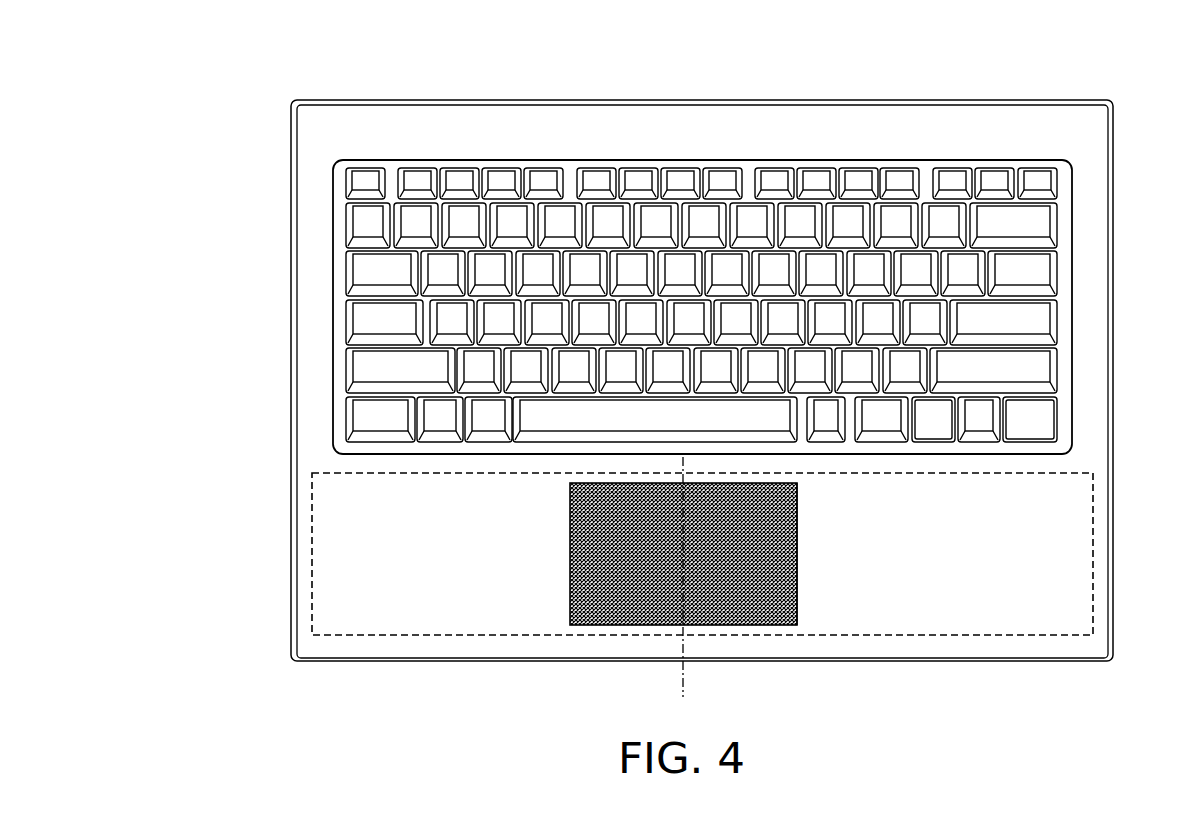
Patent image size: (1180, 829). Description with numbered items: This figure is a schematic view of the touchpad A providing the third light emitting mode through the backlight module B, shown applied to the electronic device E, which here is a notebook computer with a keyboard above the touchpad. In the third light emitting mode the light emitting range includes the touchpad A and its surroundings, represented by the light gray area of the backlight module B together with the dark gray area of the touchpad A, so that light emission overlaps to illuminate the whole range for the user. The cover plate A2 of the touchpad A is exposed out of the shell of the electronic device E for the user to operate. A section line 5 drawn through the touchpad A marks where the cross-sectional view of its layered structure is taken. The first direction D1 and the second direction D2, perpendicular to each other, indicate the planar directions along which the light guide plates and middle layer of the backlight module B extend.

The electronic device E is at (1103, 97).
The backlight module B is at (1101, 516).
The touchpad A is at (563, 628).
The cover plate A2 is at (791, 626).
The section line 5 is at (677, 465).
The first direction D1 is at (180, 712).
The second direction D2 is at (180, 712).